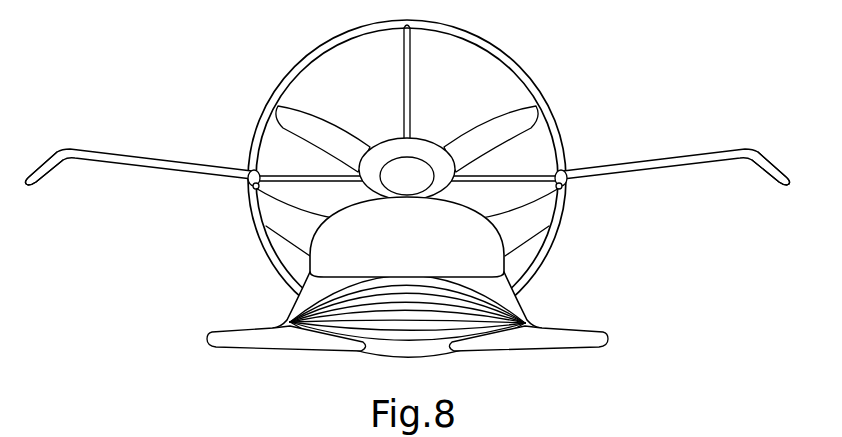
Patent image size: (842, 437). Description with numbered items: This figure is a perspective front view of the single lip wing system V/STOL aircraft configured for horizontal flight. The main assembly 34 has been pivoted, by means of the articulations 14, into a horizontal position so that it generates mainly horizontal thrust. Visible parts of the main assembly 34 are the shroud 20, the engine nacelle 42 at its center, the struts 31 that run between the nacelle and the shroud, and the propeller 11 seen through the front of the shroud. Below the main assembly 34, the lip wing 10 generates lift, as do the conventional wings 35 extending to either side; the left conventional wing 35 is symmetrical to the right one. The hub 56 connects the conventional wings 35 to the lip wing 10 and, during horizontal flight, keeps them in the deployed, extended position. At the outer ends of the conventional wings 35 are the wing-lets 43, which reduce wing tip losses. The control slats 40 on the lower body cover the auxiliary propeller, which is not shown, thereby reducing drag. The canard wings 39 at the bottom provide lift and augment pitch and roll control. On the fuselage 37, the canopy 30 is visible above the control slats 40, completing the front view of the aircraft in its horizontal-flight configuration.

The main assembly 34 is at (407, 196).
The shroud 20 is at (266, 259).
The propeller 11 is at (406, 140).
The struts 31 is at (406, 107).
The engine nacelle 42 is at (417, 150).
The lip wing 10 is at (562, 200).
The control slats 40 is at (527, 312).
The canopy 30 is at (353, 220).
The fuselage 37 is at (513, 263).
The canard wings 39 is at (210, 338).
The conventional wings 35 is at (407, 154).
The wing-lets 43 is at (47, 168).
The articulations 14 is at (250, 174).
The hub 56 is at (246, 182).